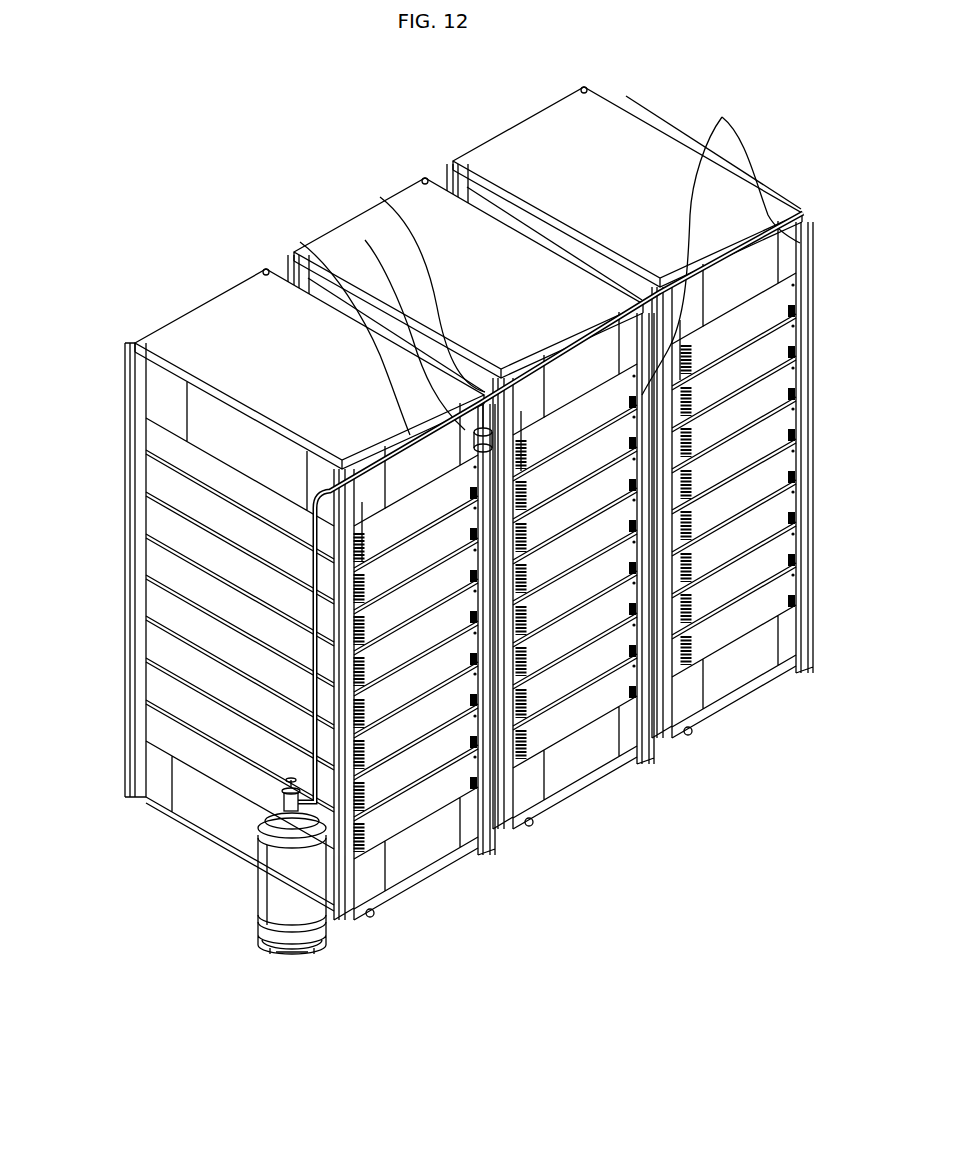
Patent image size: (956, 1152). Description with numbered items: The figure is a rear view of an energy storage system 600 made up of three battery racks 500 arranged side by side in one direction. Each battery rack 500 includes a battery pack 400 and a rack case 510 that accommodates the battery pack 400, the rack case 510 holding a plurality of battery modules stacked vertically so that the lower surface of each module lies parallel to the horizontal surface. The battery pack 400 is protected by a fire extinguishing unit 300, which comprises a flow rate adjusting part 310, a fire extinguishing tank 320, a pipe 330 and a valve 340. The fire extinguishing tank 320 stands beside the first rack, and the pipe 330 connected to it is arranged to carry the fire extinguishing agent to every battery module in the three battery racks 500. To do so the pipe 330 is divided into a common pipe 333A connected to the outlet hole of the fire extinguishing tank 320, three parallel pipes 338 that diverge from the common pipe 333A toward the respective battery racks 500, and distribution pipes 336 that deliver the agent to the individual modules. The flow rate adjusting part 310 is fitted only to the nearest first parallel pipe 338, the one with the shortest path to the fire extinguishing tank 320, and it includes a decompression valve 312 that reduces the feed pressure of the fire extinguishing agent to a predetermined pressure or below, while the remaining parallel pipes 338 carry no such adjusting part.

The energy storage system 600 is at (200, 112).
The battery rack 500 is at (500, 112).
The rack case 510 is at (125, 505).
The battery pack 400 is at (190, 448).
The pipe 330 is at (332, 157).
The distribution pipe 336 is at (300, 242).
The common pipe 333A is at (365, 240).
The parallel pipe 338 is at (380, 197).
The fire extinguishing unit 300 is at (120, 970).
The flow rate adjusting part 310 is at (533, 312).
The decompression valve 312 is at (488, 427).
The fire extinguishing tank 320 is at (262, 884).
The valve 340 is at (233, 886).